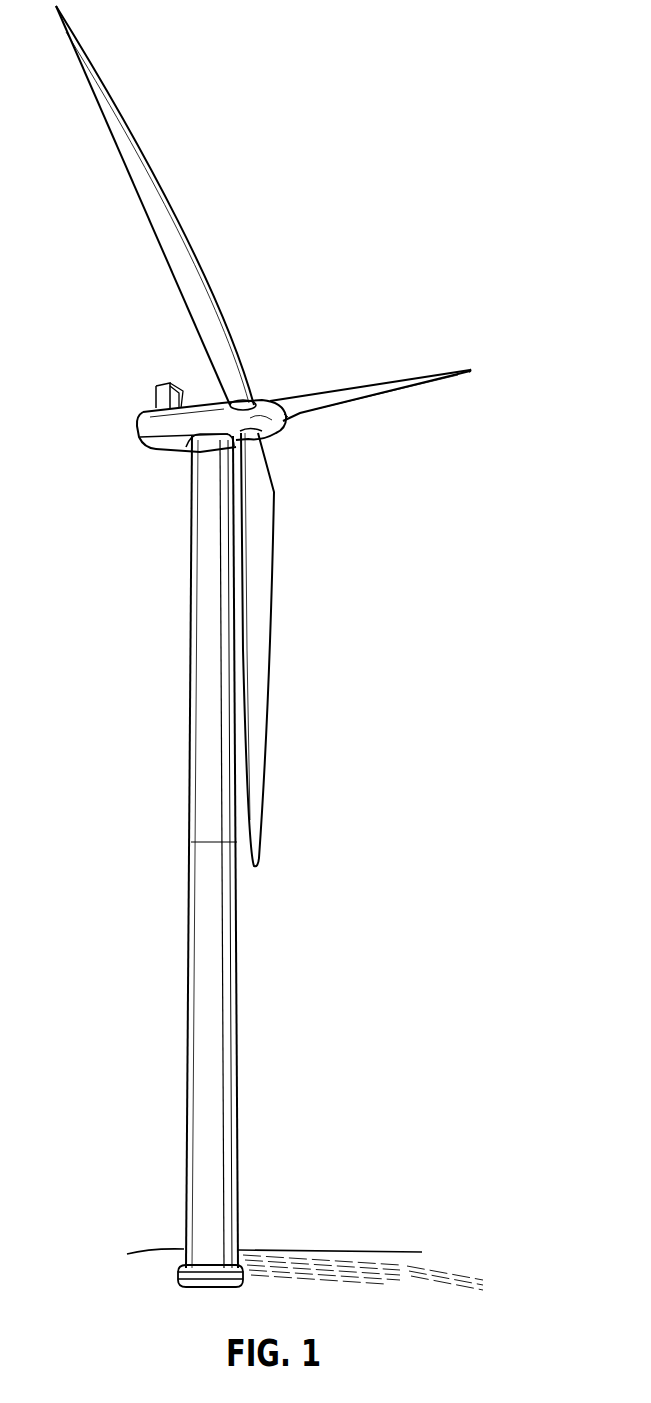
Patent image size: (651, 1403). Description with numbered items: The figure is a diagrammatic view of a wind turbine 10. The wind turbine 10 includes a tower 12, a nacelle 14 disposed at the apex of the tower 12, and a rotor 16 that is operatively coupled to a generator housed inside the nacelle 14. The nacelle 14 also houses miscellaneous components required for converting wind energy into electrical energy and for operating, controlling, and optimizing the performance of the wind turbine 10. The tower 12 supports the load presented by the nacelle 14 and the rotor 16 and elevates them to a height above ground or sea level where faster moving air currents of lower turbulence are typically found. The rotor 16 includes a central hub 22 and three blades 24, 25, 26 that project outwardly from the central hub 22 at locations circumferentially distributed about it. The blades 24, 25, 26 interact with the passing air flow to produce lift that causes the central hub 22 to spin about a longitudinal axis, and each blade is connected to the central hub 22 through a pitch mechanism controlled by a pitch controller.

The wind turbine 10 is at (397, 255).
The tower 12 is at (191, 709).
The nacelle 14 is at (143, 414).
The rotor 16 is at (272, 431).
The central hub 22 is at (266, 398).
The blade 24 is at (425, 373).
The blade 25 is at (96, 101).
The blade 26 is at (260, 812).